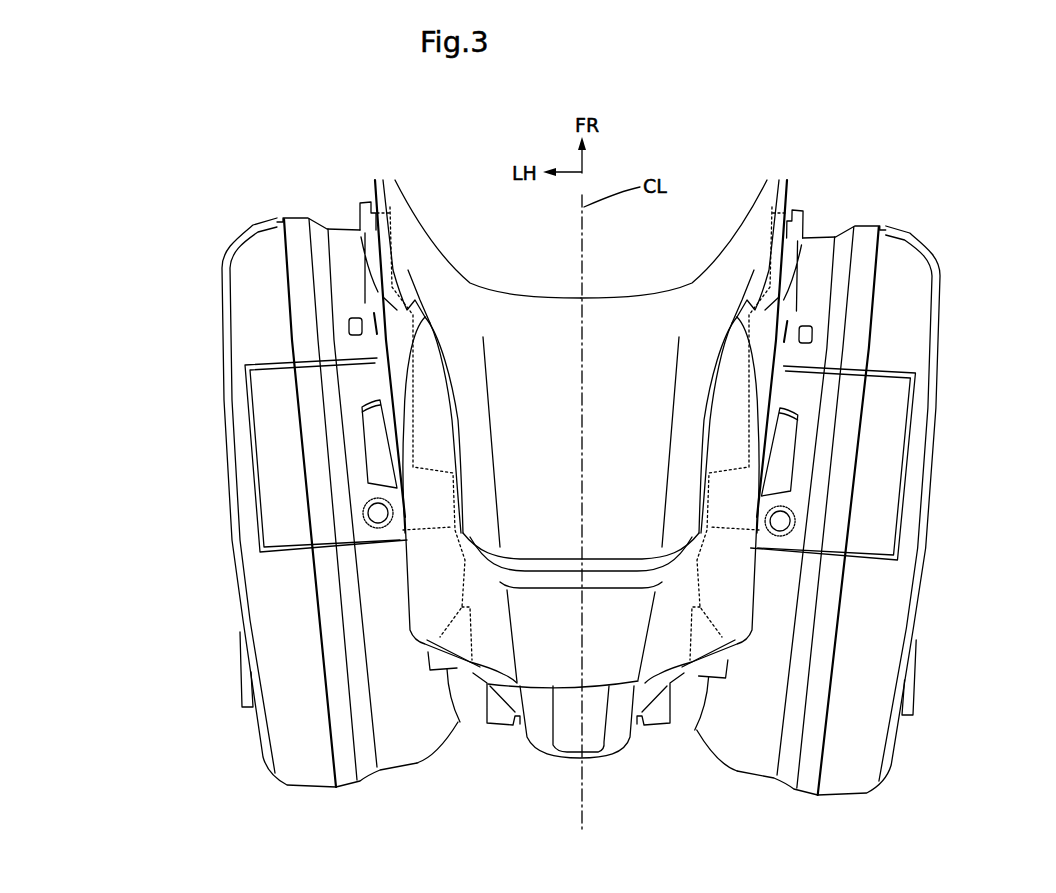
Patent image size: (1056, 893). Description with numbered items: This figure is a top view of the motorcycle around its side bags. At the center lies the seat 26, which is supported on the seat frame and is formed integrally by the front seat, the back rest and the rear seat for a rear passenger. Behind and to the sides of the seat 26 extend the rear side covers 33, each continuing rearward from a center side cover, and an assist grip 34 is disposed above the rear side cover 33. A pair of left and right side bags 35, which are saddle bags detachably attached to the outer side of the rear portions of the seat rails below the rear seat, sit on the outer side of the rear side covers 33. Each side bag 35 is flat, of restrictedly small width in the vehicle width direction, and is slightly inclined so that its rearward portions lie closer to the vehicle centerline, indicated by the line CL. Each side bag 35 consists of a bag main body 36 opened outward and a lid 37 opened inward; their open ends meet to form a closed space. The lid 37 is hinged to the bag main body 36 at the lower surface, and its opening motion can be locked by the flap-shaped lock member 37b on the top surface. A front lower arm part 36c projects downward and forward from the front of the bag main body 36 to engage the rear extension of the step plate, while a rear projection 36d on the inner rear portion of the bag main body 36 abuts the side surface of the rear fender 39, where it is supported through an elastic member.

The seat 26 is at (553, 600).
The rear side cover 33 is at (393, 300).
The assist grip 34 is at (418, 562).
The side bag 35 is at (288, 157).
The bag main body 36 is at (300, 222).
The front lower arm part 36c is at (362, 222).
The rear projection 36d is at (464, 663).
The lid 37 is at (247, 234).
The lock member 37b is at (263, 450).
The rear fender 39 is at (617, 740).